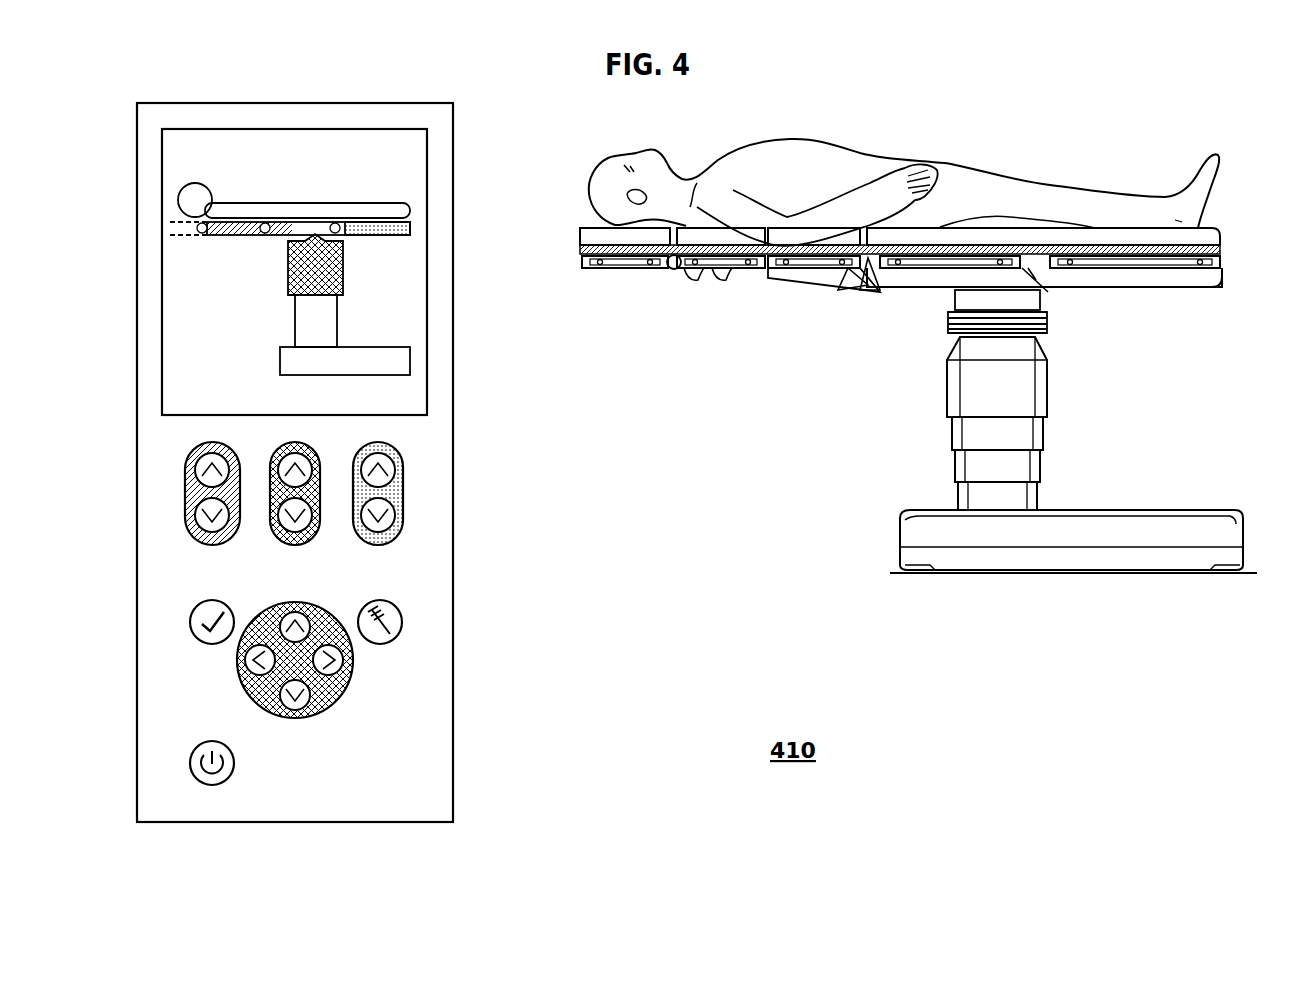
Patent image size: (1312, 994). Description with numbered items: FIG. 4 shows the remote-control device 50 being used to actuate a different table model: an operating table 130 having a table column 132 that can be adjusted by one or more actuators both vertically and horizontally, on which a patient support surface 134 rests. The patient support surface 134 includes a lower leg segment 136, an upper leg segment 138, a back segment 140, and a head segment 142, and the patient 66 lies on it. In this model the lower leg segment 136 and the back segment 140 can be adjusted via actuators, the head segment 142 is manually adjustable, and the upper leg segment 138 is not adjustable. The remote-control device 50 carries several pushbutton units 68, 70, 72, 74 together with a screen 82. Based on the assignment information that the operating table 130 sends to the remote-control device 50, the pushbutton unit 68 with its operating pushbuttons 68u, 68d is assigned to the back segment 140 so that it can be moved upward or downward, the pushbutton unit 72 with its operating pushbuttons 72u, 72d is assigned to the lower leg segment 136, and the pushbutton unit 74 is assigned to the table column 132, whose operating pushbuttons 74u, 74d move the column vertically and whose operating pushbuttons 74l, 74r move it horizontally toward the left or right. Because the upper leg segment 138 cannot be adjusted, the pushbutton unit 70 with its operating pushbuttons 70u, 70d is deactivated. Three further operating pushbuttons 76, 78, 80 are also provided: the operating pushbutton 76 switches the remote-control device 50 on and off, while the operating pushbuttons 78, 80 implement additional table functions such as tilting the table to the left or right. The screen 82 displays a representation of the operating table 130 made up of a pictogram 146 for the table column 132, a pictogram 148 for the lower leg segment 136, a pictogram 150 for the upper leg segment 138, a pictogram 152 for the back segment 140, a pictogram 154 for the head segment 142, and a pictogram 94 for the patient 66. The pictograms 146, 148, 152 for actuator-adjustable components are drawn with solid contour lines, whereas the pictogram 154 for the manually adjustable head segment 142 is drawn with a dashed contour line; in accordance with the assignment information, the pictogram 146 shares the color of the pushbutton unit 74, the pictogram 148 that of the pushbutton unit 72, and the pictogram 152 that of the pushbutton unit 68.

The remote-control device 50 is at (310, 102).
The screen 82 is at (390, 128).
The pictogram 152 is at (232, 210).
The pictogram 94 is at (247, 188).
The pictogram 150 is at (305, 222).
The pictogram 148 is at (378, 222).
The pictogram 154 is at (180, 238).
The pictogram 146 is at (344, 268).
The pushbutton unit 68 is at (154, 493).
The operating pushbutton 68u is at (196, 476).
The operating pushbutton 68d is at (196, 510).
The pushbutton unit 70 is at (296, 495).
The operating pushbutton 70u is at (274, 482).
The operating pushbutton 70d is at (287, 510).
The pushbutton unit 72 is at (436, 493).
The operating pushbutton 72u is at (398, 476).
The operating pushbutton 72d is at (398, 510).
The pushbutton unit 74 is at (297, 675).
The operating pushbutton 74u is at (290, 613).
The operating pushbutton 74d is at (300, 718).
The operating pushbutton 74l is at (248, 655).
The operating pushbutton 74r is at (345, 657).
The operating pushbutton 76 is at (190, 764).
The operating pushbutton 78 is at (190, 622).
The operating pushbutton 80 is at (402, 622).
The patient 66 is at (803, 143).
The operating table 130 is at (936, 309).
The table column 132 is at (1050, 400).
The patient support surface 134 is at (1225, 270).
The lower leg segment 136 is at (1135, 290).
The upper leg segment 138 is at (925, 290).
The back segment 140 is at (780, 283).
The head segment 142 is at (615, 275).